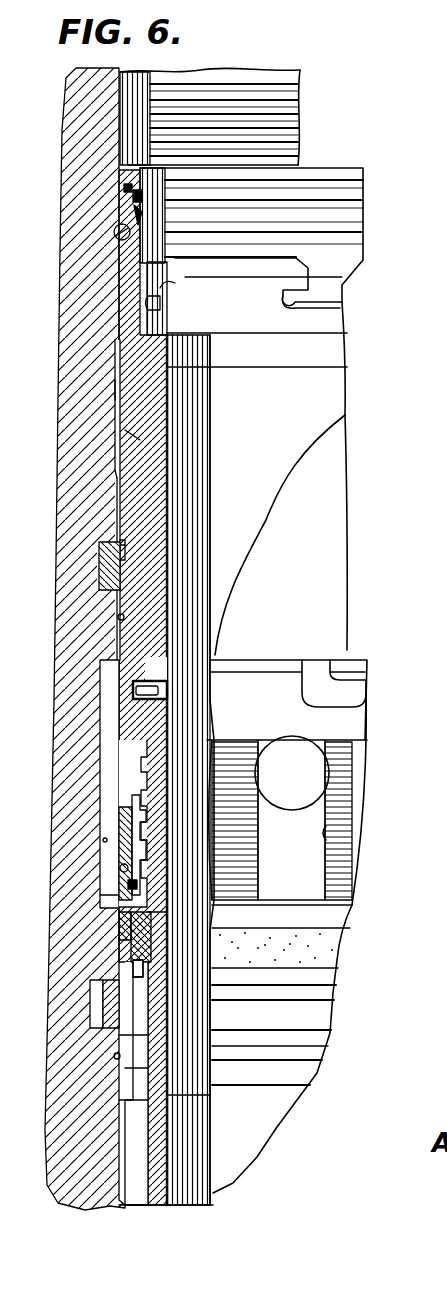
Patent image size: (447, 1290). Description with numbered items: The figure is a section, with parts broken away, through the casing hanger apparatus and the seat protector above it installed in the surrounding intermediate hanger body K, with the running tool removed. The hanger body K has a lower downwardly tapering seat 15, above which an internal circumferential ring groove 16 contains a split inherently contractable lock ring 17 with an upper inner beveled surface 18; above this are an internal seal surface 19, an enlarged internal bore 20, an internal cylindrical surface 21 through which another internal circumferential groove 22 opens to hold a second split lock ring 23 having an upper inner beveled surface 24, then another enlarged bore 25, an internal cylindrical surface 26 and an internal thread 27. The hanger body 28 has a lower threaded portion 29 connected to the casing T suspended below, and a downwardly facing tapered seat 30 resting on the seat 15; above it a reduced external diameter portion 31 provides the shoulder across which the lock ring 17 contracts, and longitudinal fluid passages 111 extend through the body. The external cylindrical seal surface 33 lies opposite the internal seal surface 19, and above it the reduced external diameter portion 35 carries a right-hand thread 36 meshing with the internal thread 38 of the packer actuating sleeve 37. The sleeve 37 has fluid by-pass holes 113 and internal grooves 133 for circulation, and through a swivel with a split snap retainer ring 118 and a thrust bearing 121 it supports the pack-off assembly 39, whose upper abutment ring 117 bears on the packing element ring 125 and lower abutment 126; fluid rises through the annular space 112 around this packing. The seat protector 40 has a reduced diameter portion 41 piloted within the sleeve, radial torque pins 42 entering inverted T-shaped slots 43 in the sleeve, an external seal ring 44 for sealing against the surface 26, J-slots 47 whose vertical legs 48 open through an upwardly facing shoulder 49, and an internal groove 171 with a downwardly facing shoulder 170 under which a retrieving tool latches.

The intermediate hanger body K is at (72, 130).
The internal thread 27 is at (125, 90).
The external seal ring 44 is at (124, 188).
The downwardly facing shoulder 170 is at (135, 196).
The internal groove 171 is at (136, 218).
The internal cylindrical surface 26 is at (116, 238).
The upwardly facing shoulder 49 is at (160, 288).
The vertical legs 48 is at (344, 262).
The J-slots 47 is at (148, 304).
The enlarged bore 25 is at (114, 383).
The seat protector 40 is at (130, 436).
The upper inner beveled surface 24 is at (125, 550).
The internal circumferential groove 22 is at (116, 548).
The split inherently contractable lock ring 23 is at (105, 566).
The internal cylindrical surface 21 is at (118, 615).
The reduced diameter portion 41 is at (210, 662).
The inverted T-shaped slots 43 is at (137, 692).
The radial torque pins 42 is at (190, 693).
The reduced external diameter portion 35 is at (175, 778).
The fluid by-pass holes 113 is at (125, 752).
The internal thread 38 is at (155, 774).
The internal grooves 133 is at (140, 815).
The packer actuating sleeve 37 is at (116, 830).
The enlarged internal bore 20 is at (104, 840).
The thrust bearing 121 is at (38, 864).
The split snap retainer ring 118 is at (127, 884).
The annular space 112 is at (108, 896).
The upper abutment ring 117 is at (118, 920).
The pack-off assembly 39 is at (44, 951).
The packing element ring 125 is at (130, 962).
The right-hand thread 36 is at (150, 848).
The external cylindrical seal surface 33 is at (150, 920).
The lower abutment 126 is at (215, 964).
The internal seal surface 19 is at (150, 990).
The internal circumferential ring groove 16 is at (96, 1001).
The split inherently contractable lock ring 17 is at (110, 1012).
The upper inner beveled surface 18 is at (180, 1002).
The reduced external diameter portion 31 is at (140, 1036).
The longitudinal fluid passages 111 is at (114, 1057).
The lower downwardly tapering seat 15 is at (140, 1068).
The hanger body 28 is at (150, 1100).
The downwardly facing tapered seat 30 is at (133, 1095).
The casing T is at (195, 1200).
The lower threaded portion 29 is at (150, 1200).